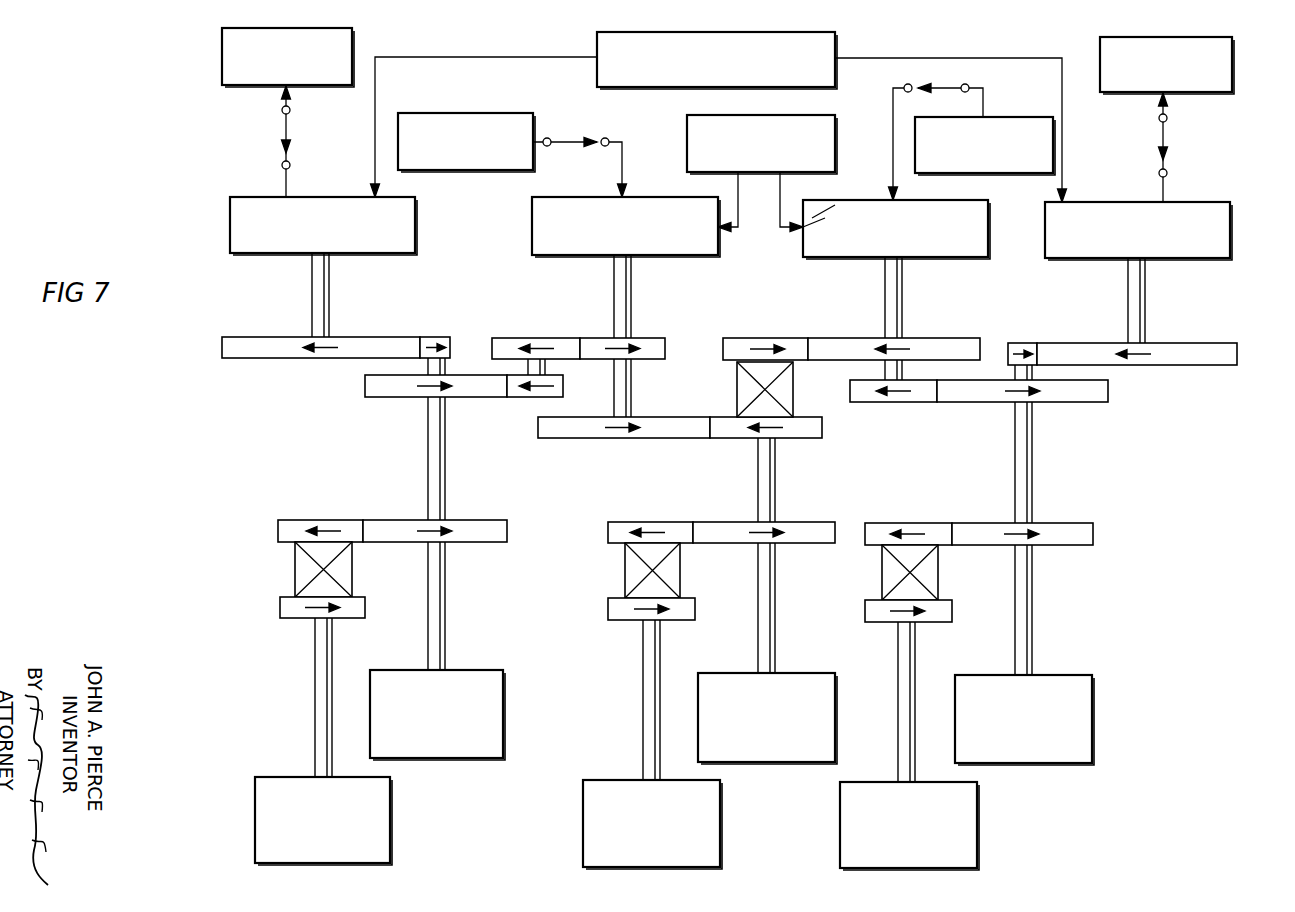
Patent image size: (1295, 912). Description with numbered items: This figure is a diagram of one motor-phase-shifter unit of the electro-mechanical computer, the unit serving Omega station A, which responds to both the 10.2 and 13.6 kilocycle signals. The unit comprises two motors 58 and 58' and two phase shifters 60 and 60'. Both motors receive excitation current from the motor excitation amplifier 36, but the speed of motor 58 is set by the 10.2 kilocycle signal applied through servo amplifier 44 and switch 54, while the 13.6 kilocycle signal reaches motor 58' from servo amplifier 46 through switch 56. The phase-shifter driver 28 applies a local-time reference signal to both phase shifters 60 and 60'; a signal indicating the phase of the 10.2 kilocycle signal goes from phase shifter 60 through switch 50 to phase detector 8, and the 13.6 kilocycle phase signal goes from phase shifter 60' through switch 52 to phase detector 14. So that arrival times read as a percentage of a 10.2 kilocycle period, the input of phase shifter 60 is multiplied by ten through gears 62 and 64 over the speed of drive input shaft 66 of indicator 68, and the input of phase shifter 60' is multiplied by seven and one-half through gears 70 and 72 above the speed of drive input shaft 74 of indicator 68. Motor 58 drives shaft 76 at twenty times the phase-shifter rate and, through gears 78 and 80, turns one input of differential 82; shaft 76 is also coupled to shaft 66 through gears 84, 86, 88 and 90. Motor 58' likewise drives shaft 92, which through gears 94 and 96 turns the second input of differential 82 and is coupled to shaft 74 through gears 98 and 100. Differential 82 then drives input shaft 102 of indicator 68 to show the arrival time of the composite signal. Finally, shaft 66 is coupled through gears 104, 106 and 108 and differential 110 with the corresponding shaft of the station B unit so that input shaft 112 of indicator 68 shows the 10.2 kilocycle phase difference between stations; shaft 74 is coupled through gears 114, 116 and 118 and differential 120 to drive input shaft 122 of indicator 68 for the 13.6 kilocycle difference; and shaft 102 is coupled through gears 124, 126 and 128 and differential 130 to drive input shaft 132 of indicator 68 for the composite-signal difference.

The phase detector 8 is at (353, 52).
The phase detector 14 is at (1232, 55).
The phase-shifter driver 28 is at (835, 52).
The motor excitation amplifier 36 is at (687, 143).
The servo amplifier 44 is at (495, 113).
The servo amplifier 46 is at (1053, 145).
The switch 50 is at (290, 128).
The switch 52 is at (1168, 128).
The switch 54 is at (562, 138).
The switch 56 is at (950, 88).
The motor 58 is at (602, 221).
The motor 58' is at (917, 225).
The phase shifter 60 is at (342, 220).
The phase shifter 60' is at (1160, 227).
The gear 62 is at (268, 358).
The gear 64 is at (440, 337).
The drive input shaft 66 is at (427, 447).
The indicator 68 is at (443, 760).
The gear 70 is at (1183, 343).
The gear 72 is at (1008, 350).
The drive input shaft 74 is at (1033, 458).
The shaft 76 is at (613, 277).
The gear 78 is at (610, 440).
The gear 80 is at (793, 438).
The differential 82 is at (737, 398).
The gear 84 is at (648, 338).
The gear 86 is at (522, 337).
The gear 88 is at (563, 393).
The gear 90 is at (365, 383).
The shaft 92 is at (883, 278).
The gear 94 is at (925, 338).
The gear 96 is at (743, 338).
The gear 98 is at (897, 402).
The gear 100 is at (1063, 403).
The input shaft 102 is at (780, 495).
The gear 104 is at (483, 543).
The gear 106 is at (295, 520).
The gear 108 is at (300, 618).
The differential 110 is at (352, 567).
The input shaft 112 is at (313, 692).
The gear 114 is at (1070, 545).
The gear 116 is at (883, 523).
The gear 118 is at (935, 622).
The differential 120 is at (938, 573).
The input shaft 122 is at (897, 643).
The gear 124 is at (803, 543).
The gear 126 is at (628, 522).
The gear 128 is at (630, 620).
The differential 130 is at (623, 568).
The input shaft 132 is at (642, 695).